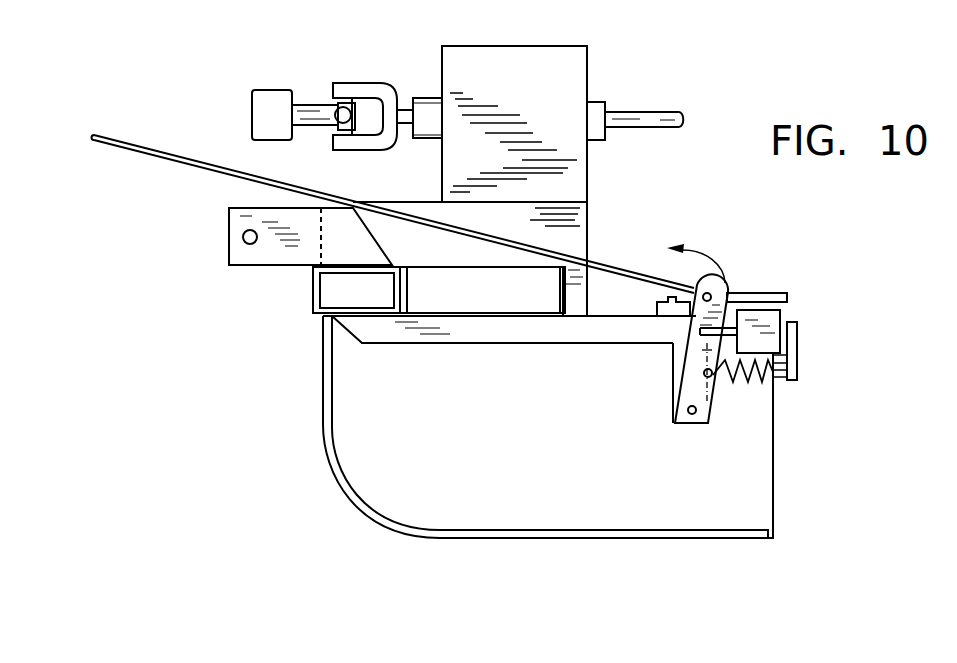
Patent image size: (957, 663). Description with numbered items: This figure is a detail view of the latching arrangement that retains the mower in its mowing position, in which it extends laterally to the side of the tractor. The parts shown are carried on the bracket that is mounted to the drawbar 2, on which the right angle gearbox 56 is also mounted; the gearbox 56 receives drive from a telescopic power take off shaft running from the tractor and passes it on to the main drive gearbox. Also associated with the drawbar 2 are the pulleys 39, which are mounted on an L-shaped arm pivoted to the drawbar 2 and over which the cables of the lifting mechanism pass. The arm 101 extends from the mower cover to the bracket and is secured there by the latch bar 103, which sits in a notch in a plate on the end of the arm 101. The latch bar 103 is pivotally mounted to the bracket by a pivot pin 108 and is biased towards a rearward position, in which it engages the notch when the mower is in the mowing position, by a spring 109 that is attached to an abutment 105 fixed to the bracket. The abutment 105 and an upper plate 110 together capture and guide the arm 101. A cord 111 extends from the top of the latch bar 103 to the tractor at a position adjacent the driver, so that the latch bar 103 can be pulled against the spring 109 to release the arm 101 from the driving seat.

The drawbar 2 is at (312, 292).
The pulleys 39 is at (577, 225).
The right angle gearbox 56 is at (540, 58).
The arm 101 is at (773, 322).
The latch bar 103 is at (725, 293).
The abutment 105 is at (797, 353).
The pivot pin 108 is at (698, 423).
The spring 109 is at (758, 382).
The upper plate 110 is at (753, 293).
The cord 111 is at (189, 163).